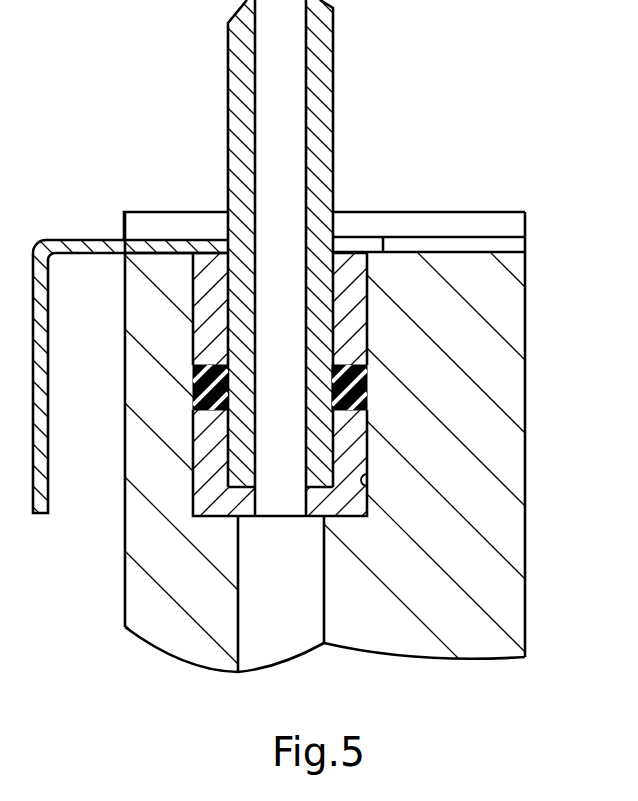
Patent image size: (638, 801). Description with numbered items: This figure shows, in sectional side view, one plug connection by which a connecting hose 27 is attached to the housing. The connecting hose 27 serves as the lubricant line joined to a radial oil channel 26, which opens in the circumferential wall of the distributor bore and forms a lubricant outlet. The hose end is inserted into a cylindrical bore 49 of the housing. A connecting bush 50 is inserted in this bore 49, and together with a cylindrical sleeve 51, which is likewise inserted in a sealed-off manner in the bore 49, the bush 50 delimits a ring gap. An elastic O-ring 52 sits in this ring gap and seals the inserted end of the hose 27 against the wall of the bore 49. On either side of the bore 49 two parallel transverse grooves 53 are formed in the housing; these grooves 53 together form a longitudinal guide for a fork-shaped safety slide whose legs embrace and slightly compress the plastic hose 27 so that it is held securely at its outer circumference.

The radial oil channel 26 is at (281, 615).
The connecting hose 27 is at (318, 147).
The cylindrical bore 49 is at (367, 486).
The connecting bush 50 is at (350, 438).
The cylindrical sleeve 51 is at (348, 308).
The O-ring 52 is at (368, 383).
The transverse groove 53 is at (443, 247).